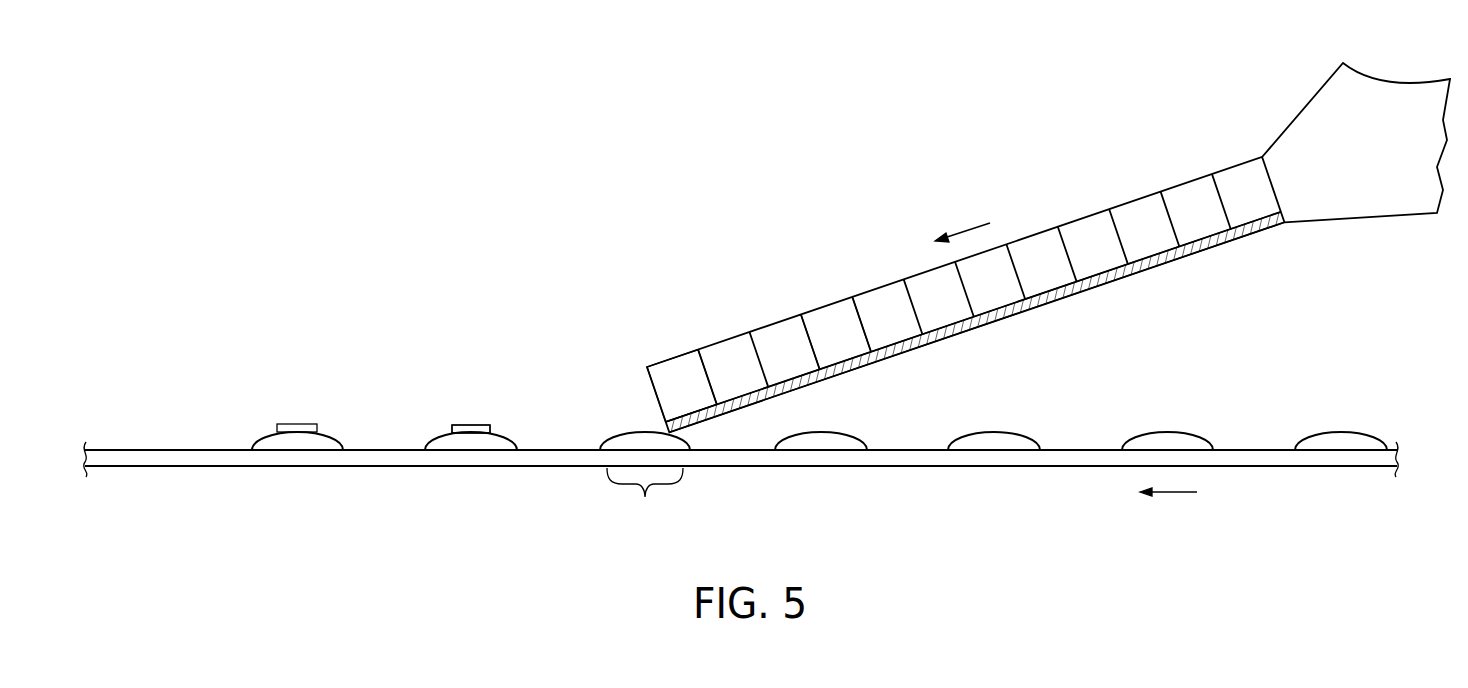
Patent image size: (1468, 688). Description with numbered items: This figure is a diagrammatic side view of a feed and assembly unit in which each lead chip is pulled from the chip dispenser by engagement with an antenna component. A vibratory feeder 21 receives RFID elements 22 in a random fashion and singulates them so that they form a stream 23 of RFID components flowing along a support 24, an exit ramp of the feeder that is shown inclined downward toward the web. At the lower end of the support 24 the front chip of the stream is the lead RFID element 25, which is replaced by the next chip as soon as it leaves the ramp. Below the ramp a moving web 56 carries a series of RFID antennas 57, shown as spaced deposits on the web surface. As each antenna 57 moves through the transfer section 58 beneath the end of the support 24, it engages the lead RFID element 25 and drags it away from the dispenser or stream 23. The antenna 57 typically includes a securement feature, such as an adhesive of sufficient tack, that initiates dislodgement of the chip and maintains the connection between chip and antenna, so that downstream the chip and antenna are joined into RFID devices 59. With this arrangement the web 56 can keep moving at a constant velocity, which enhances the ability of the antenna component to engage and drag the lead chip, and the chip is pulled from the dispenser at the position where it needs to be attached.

The vibratory feeder 21 is at (1268, 119).
The RFID elements 22 is at (477, 422).
The stream 23 is at (1067, 205).
The support 24 is at (1107, 287).
The lead RFID element 25 is at (670, 368).
The moving web 56 is at (1275, 460).
The RFID antenna 57 is at (512, 443).
The transfer section 58 is at (645, 500).
The RFID devices 59 is at (440, 427).